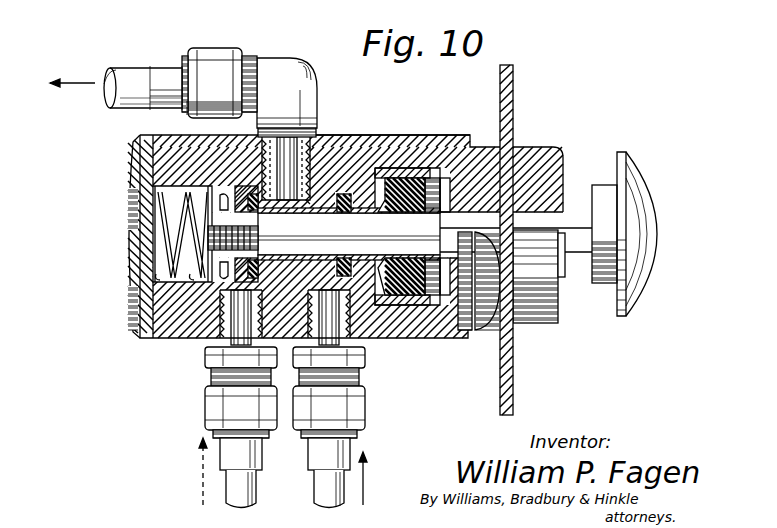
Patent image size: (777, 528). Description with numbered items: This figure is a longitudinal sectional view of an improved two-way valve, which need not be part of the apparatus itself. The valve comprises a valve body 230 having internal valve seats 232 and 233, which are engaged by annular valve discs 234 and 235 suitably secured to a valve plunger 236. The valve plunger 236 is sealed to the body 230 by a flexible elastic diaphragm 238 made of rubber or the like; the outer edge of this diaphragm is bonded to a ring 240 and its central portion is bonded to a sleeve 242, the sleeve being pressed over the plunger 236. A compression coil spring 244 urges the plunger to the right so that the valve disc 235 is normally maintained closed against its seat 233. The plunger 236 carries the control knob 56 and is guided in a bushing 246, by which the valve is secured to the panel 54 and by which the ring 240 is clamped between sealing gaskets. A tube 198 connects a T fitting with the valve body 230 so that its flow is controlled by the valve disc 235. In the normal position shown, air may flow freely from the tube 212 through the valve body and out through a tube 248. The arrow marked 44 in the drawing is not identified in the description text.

The valve body 44 is at (376, 350).
The panel 54 is at (506, 357).
The control knob 56 is at (604, 187).
The tube 198 is at (232, 488).
The tube 212 is at (320, 488).
The valve body 230 is at (344, 140).
The internal valve seat 232 is at (310, 152).
The internal valve seat 233 is at (258, 130).
The annular valve disc 234 is at (378, 165).
The annular valve disc 235 is at (253, 188).
The valve plunger 236 is at (330, 236).
The flexible elastic diaphragm 238 is at (412, 165).
The ring 240 is at (400, 165).
The sleeve 242 is at (393, 310).
The compression coil spring 244 is at (160, 232).
The bushing 246 is at (507, 146).
The tube 248 is at (130, 78).